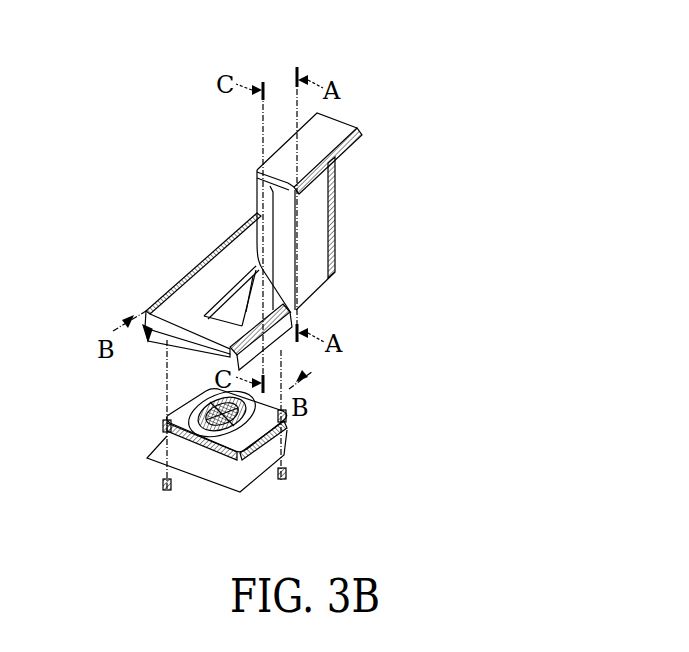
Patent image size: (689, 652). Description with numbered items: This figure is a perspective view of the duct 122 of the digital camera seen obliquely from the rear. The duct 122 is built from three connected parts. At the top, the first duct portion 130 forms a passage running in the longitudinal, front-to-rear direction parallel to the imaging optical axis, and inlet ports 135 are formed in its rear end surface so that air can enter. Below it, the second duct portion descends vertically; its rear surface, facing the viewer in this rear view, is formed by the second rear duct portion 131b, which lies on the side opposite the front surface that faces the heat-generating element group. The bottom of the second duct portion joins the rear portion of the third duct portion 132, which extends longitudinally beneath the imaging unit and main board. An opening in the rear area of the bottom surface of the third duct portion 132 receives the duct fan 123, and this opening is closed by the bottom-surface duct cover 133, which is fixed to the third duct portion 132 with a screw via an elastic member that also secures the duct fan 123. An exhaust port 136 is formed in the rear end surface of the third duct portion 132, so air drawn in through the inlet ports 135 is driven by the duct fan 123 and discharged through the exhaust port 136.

The duct 122 is at (466, 92).
The first duct portion 130 is at (331, 128).
The inlet ports 135 is at (354, 128).
The second rear duct portion 131b is at (318, 235).
The third duct portion 132 is at (213, 283).
The exhaust port 136 is at (163, 340).
The duct fan 123 is at (288, 422).
The bottom-surface duct cover 133 is at (238, 471).